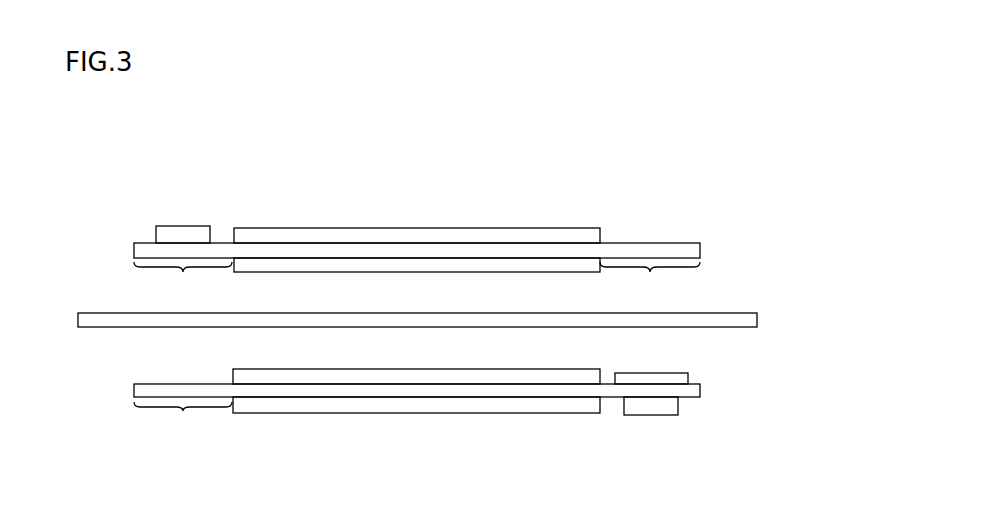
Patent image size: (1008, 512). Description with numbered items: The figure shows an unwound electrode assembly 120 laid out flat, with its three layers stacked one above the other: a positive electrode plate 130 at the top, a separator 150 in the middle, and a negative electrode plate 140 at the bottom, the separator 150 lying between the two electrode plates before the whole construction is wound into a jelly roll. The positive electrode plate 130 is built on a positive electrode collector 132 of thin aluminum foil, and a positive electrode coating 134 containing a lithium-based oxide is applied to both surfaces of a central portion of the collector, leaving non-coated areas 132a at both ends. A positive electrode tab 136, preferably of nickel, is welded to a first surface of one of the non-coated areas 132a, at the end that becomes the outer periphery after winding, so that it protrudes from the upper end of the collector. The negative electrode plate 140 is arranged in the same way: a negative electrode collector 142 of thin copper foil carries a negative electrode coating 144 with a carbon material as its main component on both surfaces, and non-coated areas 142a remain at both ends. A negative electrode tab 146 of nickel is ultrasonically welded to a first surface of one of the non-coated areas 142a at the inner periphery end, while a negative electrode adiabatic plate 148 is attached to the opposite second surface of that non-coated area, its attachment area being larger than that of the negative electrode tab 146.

The electrode assembly 120 is at (815, 210).
The positive electrode plate 130 is at (660, 219).
The positive electrode collector 132 is at (702, 250).
The non-coated areas 132a is at (417, 280).
The positive electrode coating 134 is at (313, 232).
The positive electrode tab 136 is at (184, 227).
The negative electrode plate 140 is at (715, 432).
The negative electrode collector 142 is at (703, 390).
The non-coated areas 142a is at (615, 455).
The negative electrode coating 144 is at (538, 413).
The negative electrode tab 146 is at (657, 415).
The negative electrode adiabatic plate 148 is at (680, 375).
The separator 150 is at (707, 314).